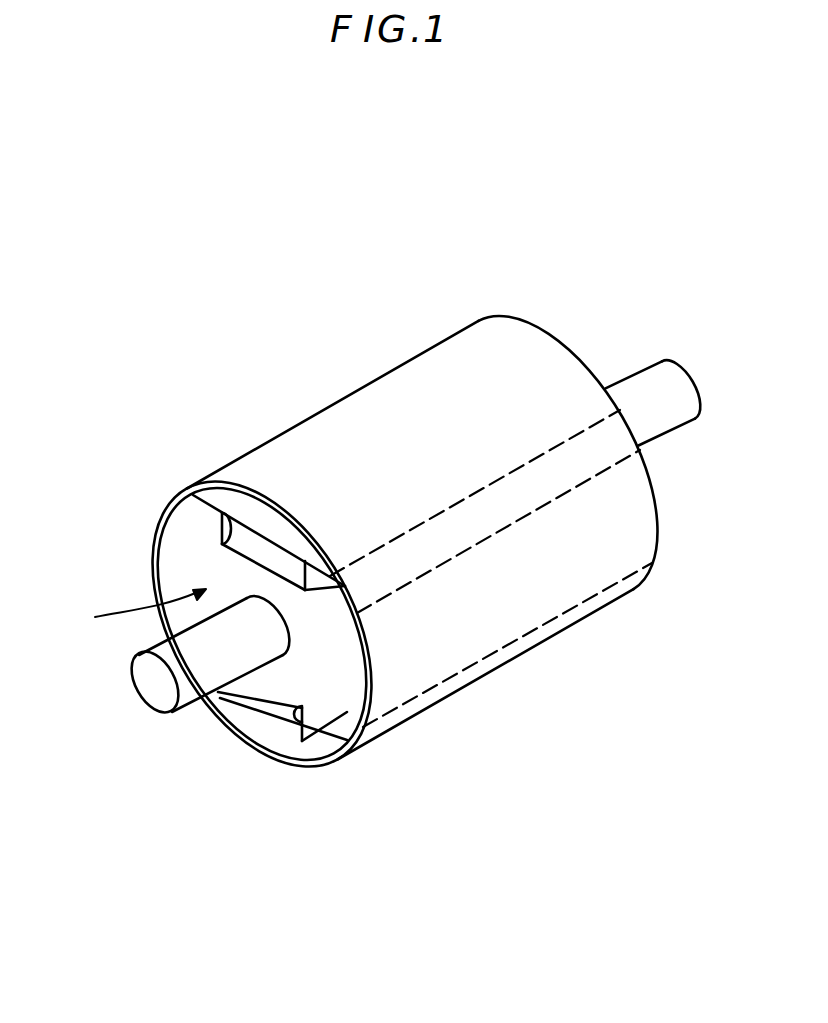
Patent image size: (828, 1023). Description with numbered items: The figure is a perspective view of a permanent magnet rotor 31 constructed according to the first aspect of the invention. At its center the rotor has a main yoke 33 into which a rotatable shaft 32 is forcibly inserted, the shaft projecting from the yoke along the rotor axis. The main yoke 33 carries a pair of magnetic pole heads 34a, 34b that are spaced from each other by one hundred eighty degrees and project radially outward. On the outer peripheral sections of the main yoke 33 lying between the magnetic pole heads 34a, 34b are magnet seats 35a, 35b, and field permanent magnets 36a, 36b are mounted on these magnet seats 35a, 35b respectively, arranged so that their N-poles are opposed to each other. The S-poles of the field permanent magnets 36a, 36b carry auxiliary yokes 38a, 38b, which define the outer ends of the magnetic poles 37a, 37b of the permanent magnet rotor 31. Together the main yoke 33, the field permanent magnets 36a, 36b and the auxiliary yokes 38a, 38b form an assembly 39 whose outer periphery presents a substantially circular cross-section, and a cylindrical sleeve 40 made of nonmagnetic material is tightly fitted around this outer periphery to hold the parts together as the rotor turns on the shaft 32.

The permanent magnet rotor 31 is at (546, 165).
The rotatable shaft 32 is at (163, 700).
The main yoke 33 is at (327, 662).
The magnetic pole head 34a is at (183, 558).
The magnetic pole head 34b is at (340, 695).
The magnet seat 35a is at (222, 516).
The magnet seat 35b is at (305, 742).
The field permanent magnet 36a is at (298, 585).
The field permanent magnet 36b is at (285, 722).
The magnetic pole 37a is at (268, 500).
The magnetic pole 37b is at (264, 752).
The auxiliary yoke 38a is at (288, 541).
The auxiliary yoke 38b is at (240, 722).
The assembly 39 is at (129, 618).
The cylindrical sleeve 40 is at (560, 592).